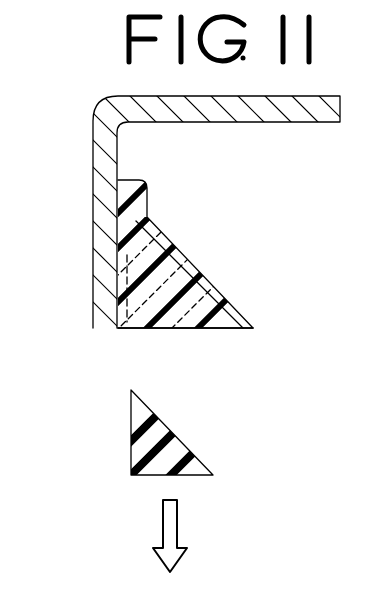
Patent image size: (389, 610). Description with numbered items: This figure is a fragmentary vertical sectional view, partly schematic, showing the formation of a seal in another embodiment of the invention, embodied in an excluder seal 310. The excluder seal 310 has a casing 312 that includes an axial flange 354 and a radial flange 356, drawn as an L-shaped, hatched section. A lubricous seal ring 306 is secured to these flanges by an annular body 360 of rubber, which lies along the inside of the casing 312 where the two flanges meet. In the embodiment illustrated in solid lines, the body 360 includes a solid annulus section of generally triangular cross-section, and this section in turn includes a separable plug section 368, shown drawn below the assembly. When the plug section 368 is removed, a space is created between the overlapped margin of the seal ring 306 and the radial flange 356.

The excluder seal 310 is at (298, 195).
The axial flange 354 is at (280, 103).
The radial flange 356 is at (105, 190).
The casing 312 is at (226, 131).
The lubricous seal ring 306 is at (228, 269).
The annular body of rubber 360 is at (178, 313).
The separable plug section 368 is at (175, 453).